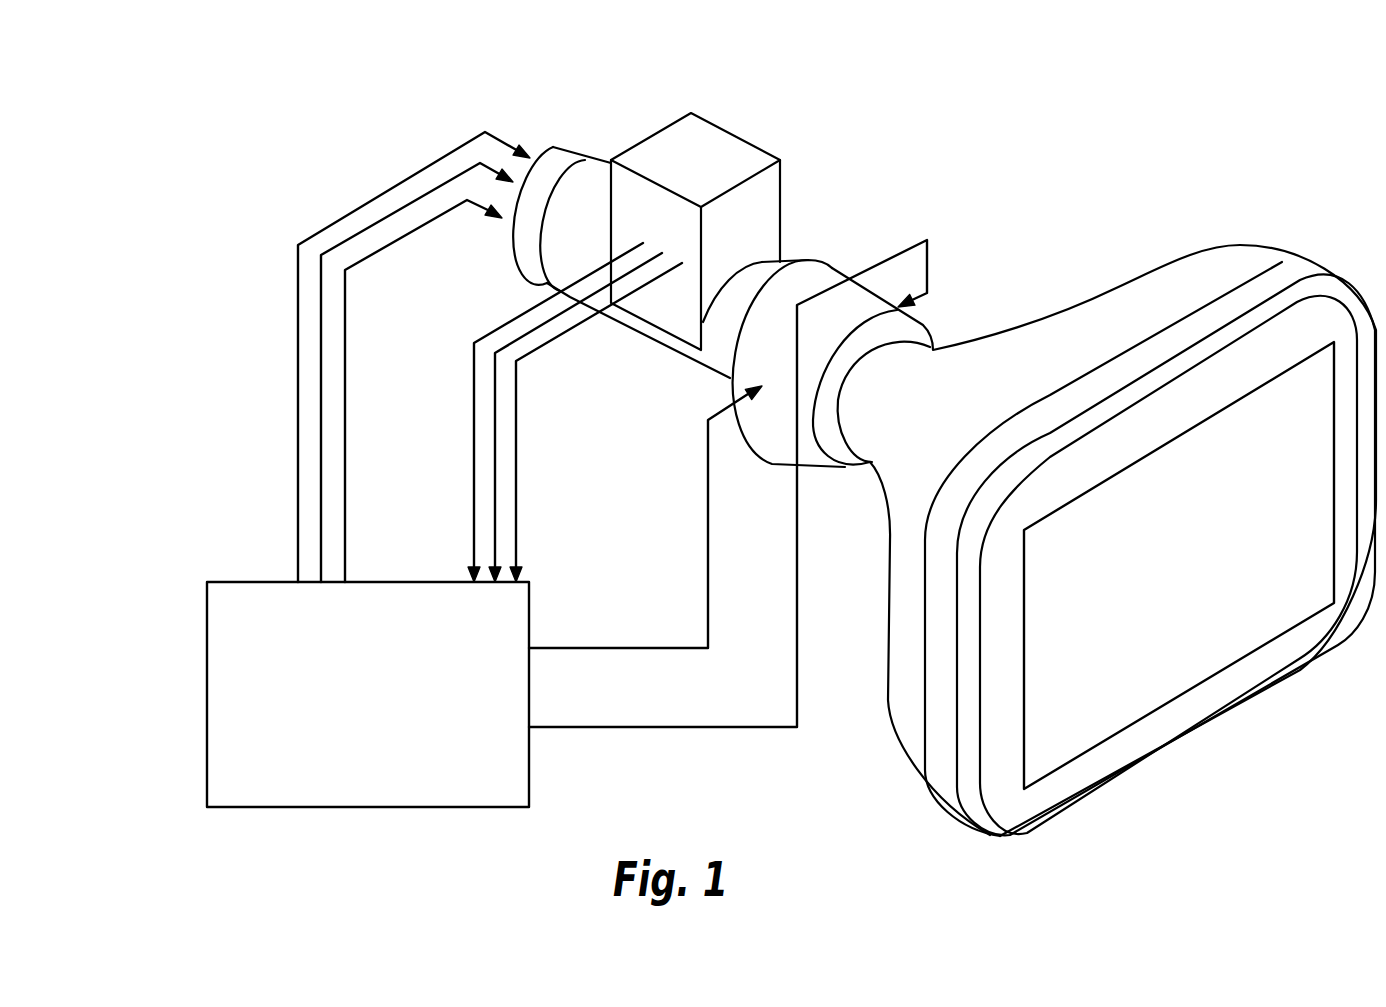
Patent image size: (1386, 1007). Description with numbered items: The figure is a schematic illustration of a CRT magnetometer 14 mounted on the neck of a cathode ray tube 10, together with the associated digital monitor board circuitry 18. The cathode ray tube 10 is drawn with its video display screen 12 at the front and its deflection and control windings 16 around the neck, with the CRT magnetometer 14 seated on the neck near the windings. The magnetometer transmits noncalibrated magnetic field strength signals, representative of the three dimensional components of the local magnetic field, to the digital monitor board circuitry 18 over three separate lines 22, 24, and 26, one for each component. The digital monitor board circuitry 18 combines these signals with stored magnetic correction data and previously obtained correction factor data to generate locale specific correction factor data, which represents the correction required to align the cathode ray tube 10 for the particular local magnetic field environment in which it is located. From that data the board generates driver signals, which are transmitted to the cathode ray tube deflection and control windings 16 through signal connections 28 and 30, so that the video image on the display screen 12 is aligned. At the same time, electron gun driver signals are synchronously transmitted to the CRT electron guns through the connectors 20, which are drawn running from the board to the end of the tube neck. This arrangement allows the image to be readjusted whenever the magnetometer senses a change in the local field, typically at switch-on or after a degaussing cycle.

The cathode ray tube 10 is at (1183, 292).
The video display screen 12 is at (1168, 655).
The CRT magnetometer 14 is at (690, 145).
The cathode ray tube deflection and control windings 16 is at (835, 275).
The digital monitor board circuitry 18 is at (530, 749).
The connectors 20 is at (300, 451).
The line 22 is at (474, 435).
The line 24 is at (494, 448).
The line 26 is at (516, 530).
The signal connection 28 is at (708, 510).
The signal connection 30 is at (797, 495).